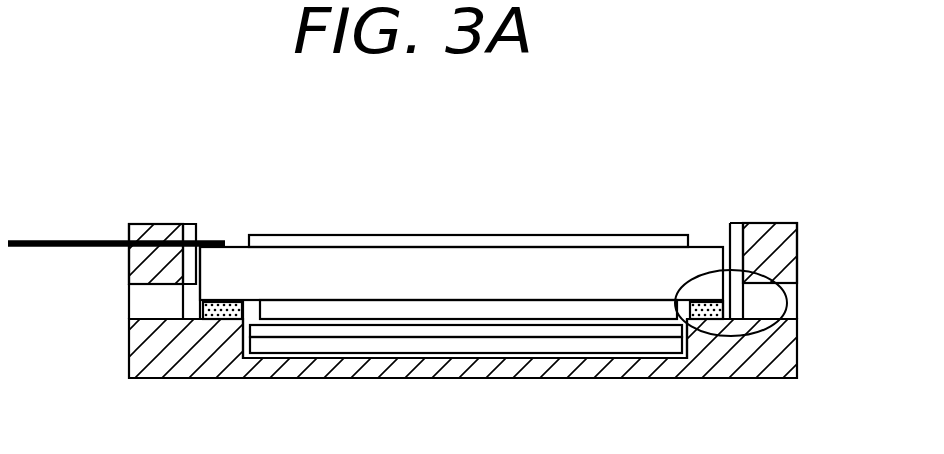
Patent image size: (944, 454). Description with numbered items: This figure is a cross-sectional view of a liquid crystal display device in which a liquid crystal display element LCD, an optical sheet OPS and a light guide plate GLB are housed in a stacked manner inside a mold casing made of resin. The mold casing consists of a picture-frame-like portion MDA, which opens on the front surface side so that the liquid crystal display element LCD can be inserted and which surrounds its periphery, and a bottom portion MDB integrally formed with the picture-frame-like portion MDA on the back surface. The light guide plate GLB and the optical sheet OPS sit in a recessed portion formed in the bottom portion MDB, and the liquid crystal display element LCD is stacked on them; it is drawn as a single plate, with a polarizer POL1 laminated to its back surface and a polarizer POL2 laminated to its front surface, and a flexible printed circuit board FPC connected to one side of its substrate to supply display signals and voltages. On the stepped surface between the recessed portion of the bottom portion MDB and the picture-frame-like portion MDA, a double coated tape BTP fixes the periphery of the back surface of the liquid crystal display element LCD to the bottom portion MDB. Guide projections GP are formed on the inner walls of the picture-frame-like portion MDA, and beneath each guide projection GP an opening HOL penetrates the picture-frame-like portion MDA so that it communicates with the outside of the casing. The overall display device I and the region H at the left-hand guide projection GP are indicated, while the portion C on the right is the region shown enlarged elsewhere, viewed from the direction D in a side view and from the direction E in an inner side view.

The flexible printed circuit board FPC is at (58, 240).
The hook / engagement portion H is at (226, 206).
The polarizer POL2 is at (366, 243).
The liquid crystal display element LCD is at (462, 263).
The polarizer POL1 is at (536, 313).
The display module I is at (629, 184).
The portion C is at (683, 280).
The guide projection GP is at (186, 266).
The picture-frame-like portion MDA is at (791, 222).
The opening HOL is at (137, 306).
The direction E is at (653, 292).
The direction D is at (833, 303).
The double coated tape BTP is at (216, 320).
The light guide plate GLB is at (378, 345).
The optical sheet OPS is at (540, 333).
The bottom portion MDB is at (643, 370).